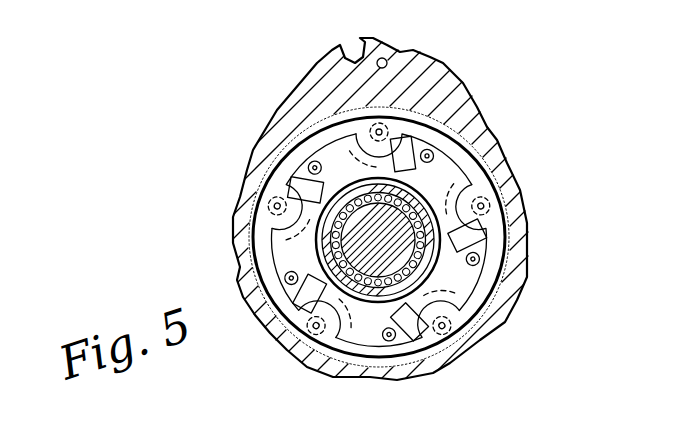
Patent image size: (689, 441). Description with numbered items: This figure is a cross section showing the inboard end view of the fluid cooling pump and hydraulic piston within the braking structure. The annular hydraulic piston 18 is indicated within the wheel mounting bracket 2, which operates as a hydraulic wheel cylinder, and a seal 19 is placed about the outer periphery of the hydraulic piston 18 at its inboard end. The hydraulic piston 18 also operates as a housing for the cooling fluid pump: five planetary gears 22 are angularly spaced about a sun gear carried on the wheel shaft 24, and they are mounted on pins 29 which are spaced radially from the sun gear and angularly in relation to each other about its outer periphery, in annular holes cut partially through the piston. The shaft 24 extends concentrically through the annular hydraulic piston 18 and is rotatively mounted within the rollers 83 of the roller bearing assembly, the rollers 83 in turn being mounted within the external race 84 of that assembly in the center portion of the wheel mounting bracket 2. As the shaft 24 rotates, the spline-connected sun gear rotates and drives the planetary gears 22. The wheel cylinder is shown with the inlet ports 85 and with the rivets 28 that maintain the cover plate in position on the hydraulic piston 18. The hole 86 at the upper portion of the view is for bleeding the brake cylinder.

The wheel mounting bracket 2 is at (468, 97).
The hydraulic piston 18 is at (262, 240).
The seal 19 is at (519, 272).
The planetary gears 22 is at (362, 167).
The wheel shaft 24 is at (423, 257).
The rivets 28 is at (434, 153).
The pins 29 is at (372, 112).
The rollers 83 is at (410, 203).
The external race 84 is at (388, 294).
The inlet ports 85 is at (404, 136).
The hole 86 is at (396, 58).